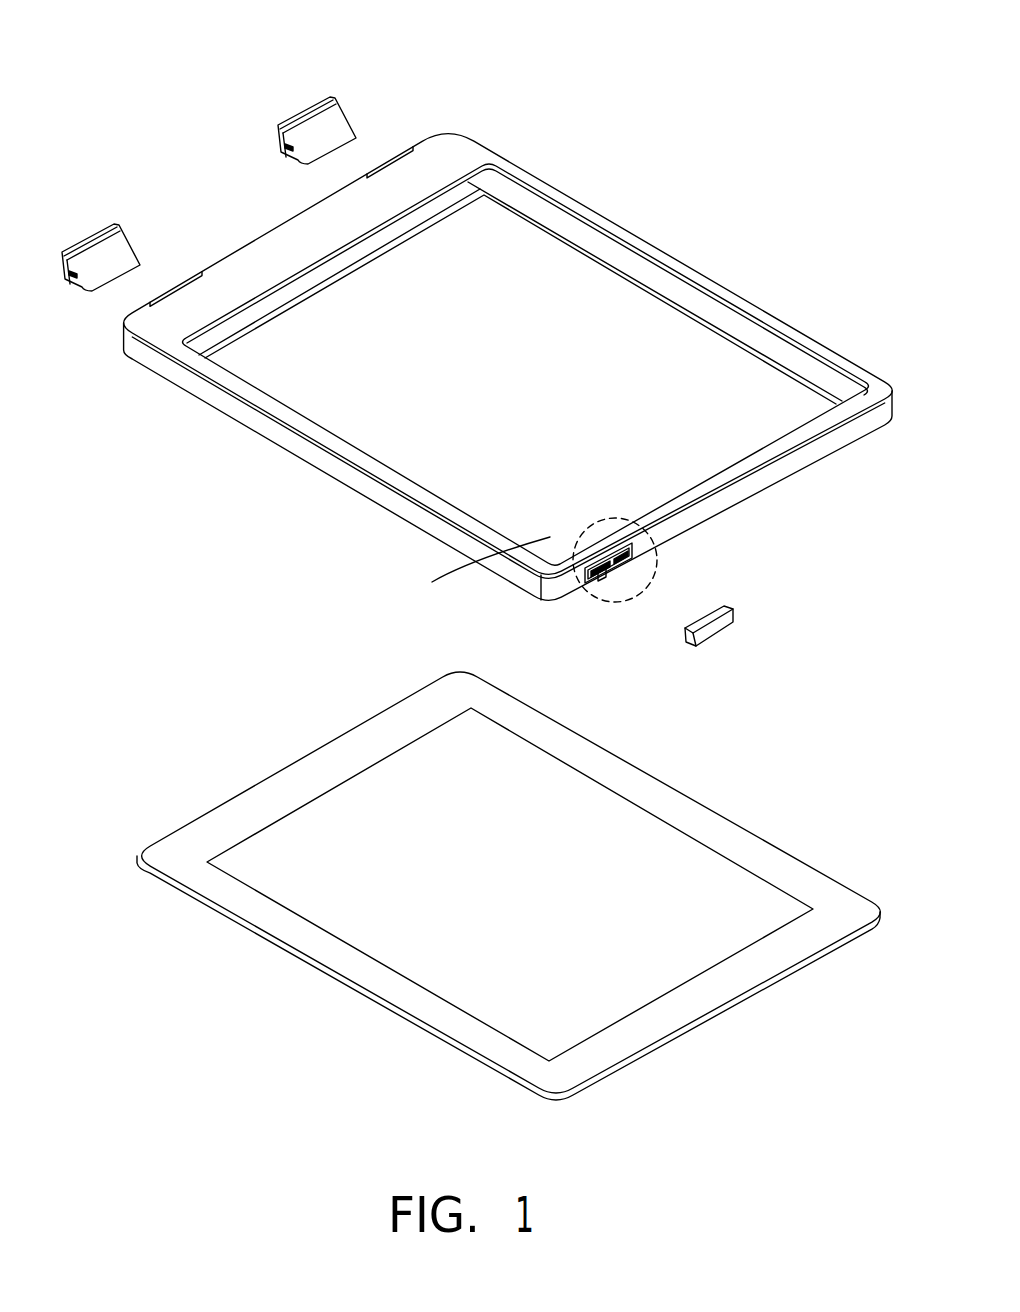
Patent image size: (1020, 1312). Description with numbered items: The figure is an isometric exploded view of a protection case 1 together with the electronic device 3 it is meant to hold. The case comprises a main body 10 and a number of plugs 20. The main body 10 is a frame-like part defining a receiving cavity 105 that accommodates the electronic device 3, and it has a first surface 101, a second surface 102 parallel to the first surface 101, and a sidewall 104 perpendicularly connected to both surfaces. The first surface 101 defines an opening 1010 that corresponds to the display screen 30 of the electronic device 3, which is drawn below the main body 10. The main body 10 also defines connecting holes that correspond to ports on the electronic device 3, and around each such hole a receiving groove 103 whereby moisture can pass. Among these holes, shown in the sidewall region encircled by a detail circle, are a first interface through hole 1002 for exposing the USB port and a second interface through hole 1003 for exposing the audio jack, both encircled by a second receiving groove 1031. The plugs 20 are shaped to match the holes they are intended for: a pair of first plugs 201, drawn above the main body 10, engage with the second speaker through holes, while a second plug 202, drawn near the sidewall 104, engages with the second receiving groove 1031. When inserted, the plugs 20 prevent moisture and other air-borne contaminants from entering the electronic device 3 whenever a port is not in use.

The protection case 1 is at (168, 493).
The main body 10 is at (565, 153).
The first surface 101 is at (447, 148).
The second surface 102 is at (268, 440).
The receiving groove 103 is at (643, 550).
The sidewall 104 is at (185, 372).
The receiving cavity 105 is at (668, 287).
The opening 1010 is at (605, 228).
The first interface through hole 1002 is at (600, 582).
The second interface through hole 1003 is at (633, 557).
The second receiving groove 1031 is at (608, 582).
The plug 20 is at (268, 92).
The first plug 201 is at (340, 130).
The second plug 202 is at (727, 618).
The electronic device 3 is at (205, 835).
The display screen 30 is at (620, 840).